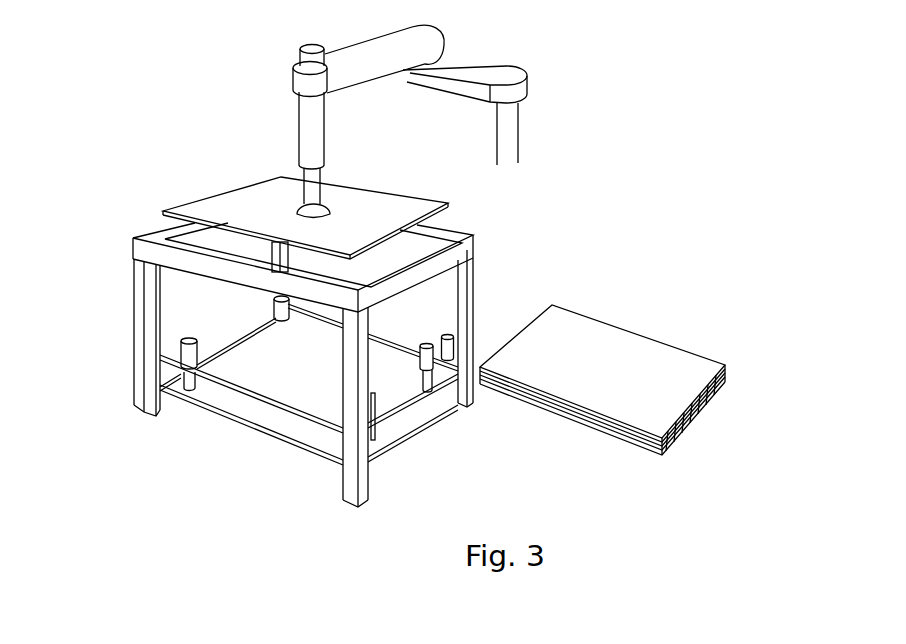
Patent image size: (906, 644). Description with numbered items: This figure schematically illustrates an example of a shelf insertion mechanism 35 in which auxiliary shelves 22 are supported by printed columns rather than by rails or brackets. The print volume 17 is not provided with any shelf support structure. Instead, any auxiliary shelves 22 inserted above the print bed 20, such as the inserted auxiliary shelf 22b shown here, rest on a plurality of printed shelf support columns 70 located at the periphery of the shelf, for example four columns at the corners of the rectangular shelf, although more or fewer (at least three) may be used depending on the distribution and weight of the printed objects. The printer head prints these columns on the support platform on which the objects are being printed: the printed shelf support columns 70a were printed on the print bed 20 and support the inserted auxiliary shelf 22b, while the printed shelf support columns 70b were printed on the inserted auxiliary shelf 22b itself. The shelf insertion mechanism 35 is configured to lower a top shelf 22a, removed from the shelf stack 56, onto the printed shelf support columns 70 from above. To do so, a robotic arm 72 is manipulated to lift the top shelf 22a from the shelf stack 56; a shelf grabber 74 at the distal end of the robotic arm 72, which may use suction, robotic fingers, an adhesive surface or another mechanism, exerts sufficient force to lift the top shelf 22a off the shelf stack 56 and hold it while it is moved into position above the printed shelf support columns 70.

The print volume 17 is at (116, 201).
The print bed 20 is at (220, 419).
The auxiliary shelves 22 is at (688, 428).
The top shelf 22a is at (366, 213).
The inserted auxiliary shelf 22b is at (397, 411).
The shelf insertion mechanism 35 is at (622, 147).
The shelf stack 56 is at (674, 300).
The printed shelf support columns 70 is at (180, 361).
The printed shelf support columns 70a is at (434, 390).
The printed shelf support columns 70b is at (447, 332).
The robotic arm 72 is at (325, 104).
The shelf grabber 74 is at (296, 207).